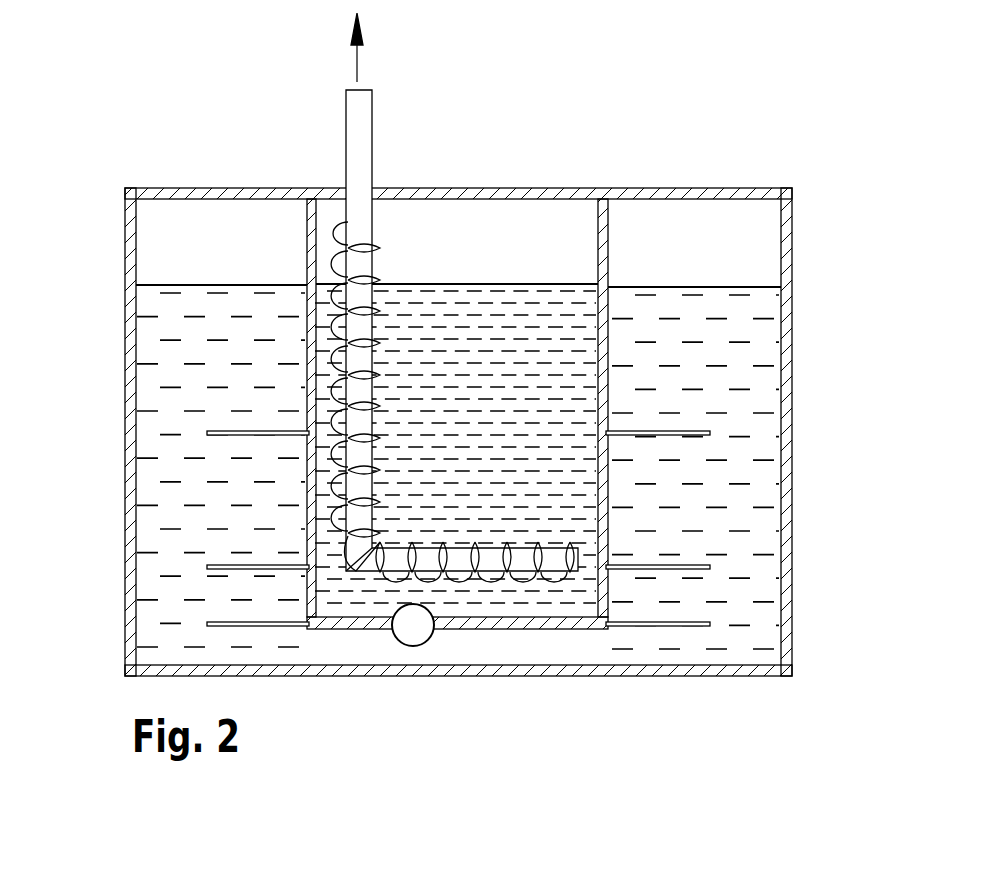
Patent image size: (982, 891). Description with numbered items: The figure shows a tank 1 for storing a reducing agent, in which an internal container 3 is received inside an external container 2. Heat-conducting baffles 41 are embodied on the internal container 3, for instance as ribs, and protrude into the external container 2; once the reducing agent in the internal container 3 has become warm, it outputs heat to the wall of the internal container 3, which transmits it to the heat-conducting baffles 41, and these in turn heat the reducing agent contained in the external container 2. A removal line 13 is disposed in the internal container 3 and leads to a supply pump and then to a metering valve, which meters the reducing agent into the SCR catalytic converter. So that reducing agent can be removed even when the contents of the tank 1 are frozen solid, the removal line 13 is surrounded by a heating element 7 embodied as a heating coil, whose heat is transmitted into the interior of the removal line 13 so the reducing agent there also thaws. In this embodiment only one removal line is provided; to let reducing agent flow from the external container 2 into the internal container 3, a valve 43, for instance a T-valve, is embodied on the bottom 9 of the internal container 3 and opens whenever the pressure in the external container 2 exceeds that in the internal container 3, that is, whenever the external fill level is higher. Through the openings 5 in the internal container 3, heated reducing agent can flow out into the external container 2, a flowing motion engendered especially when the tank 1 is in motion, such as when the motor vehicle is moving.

The tank 1 is at (115, 163).
The external container 2 is at (177, 188).
The internal container 3 is at (612, 212).
The openings 5 is at (307, 490).
The heating element 7 is at (379, 283).
The bottom 9 is at (563, 630).
The removal line 13 is at (348, 366).
The heat-conducting baffles 41 is at (670, 622).
The valve 43 is at (416, 646).